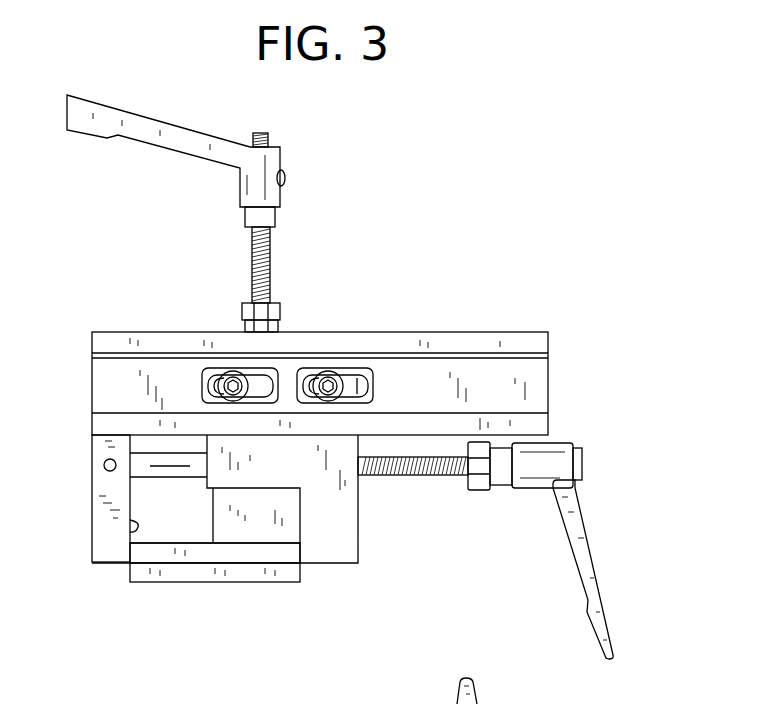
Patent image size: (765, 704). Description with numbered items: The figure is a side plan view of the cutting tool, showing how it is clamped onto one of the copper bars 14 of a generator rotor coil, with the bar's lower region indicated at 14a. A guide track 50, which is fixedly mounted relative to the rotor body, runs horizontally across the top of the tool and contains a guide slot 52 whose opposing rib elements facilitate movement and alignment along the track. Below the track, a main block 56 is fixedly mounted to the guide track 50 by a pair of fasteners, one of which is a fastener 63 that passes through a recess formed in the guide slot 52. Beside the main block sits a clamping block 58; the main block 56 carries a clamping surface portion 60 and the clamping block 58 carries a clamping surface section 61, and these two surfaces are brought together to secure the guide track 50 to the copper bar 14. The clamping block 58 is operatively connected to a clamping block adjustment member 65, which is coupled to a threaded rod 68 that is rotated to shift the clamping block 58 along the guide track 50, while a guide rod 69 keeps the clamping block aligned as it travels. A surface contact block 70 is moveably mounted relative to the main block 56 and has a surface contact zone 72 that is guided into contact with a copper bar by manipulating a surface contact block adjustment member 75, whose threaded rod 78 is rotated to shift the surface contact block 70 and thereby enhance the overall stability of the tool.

The copper bar 14 is at (157, 553).
The base plate lower surface 14a is at (185, 572).
The guide track 50 is at (300, 360).
The guide slot 52 is at (118, 382).
The main block 56 is at (342, 512).
The clamping block 58 is at (102, 518).
The clamping surface portion 60 is at (300, 552).
The clamping surface section 61 is at (137, 531).
The fastener 63 is at (229, 373).
The clamping block adjustment member 65 is at (587, 487).
The threaded rod 68 is at (443, 476).
The guide rod 69 is at (142, 461).
The surface contact block 70 is at (208, 507).
The surface contact zone 72 is at (238, 545).
The surface contact block adjustment member 75 is at (201, 114).
The threaded rod 78 is at (272, 240).